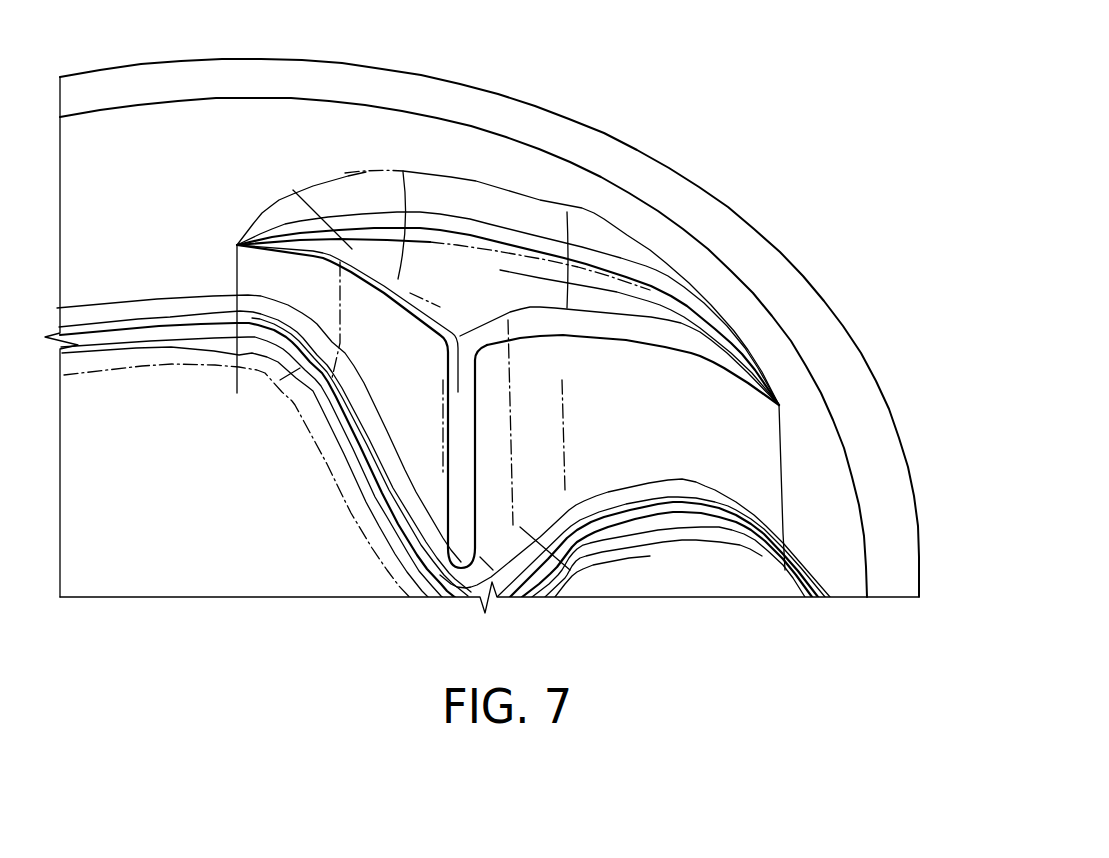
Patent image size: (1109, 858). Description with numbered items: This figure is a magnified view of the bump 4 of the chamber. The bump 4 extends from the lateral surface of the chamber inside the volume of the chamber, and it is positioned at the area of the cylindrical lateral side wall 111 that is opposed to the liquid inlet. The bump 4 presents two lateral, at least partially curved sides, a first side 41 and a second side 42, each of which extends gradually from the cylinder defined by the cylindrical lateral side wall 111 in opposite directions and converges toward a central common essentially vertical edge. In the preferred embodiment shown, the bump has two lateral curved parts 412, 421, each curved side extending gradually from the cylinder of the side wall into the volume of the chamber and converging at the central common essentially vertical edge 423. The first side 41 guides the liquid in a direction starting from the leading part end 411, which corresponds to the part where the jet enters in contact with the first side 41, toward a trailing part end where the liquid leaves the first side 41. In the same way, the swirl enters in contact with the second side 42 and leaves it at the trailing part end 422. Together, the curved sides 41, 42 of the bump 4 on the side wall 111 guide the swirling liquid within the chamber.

The bump 4 is at (507, 52).
The cylindrical lateral side wall 111 is at (115, 125).
The first side 41 is at (366, 280).
The second side 42 is at (562, 334).
The lateral curved part 421 is at (692, 418).
The trailing part end 422 is at (493, 532).
The central common essentially vertical edge 423 is at (453, 463).
The leading part end 411 is at (388, 395).
The lateral curved part 412 is at (289, 288).